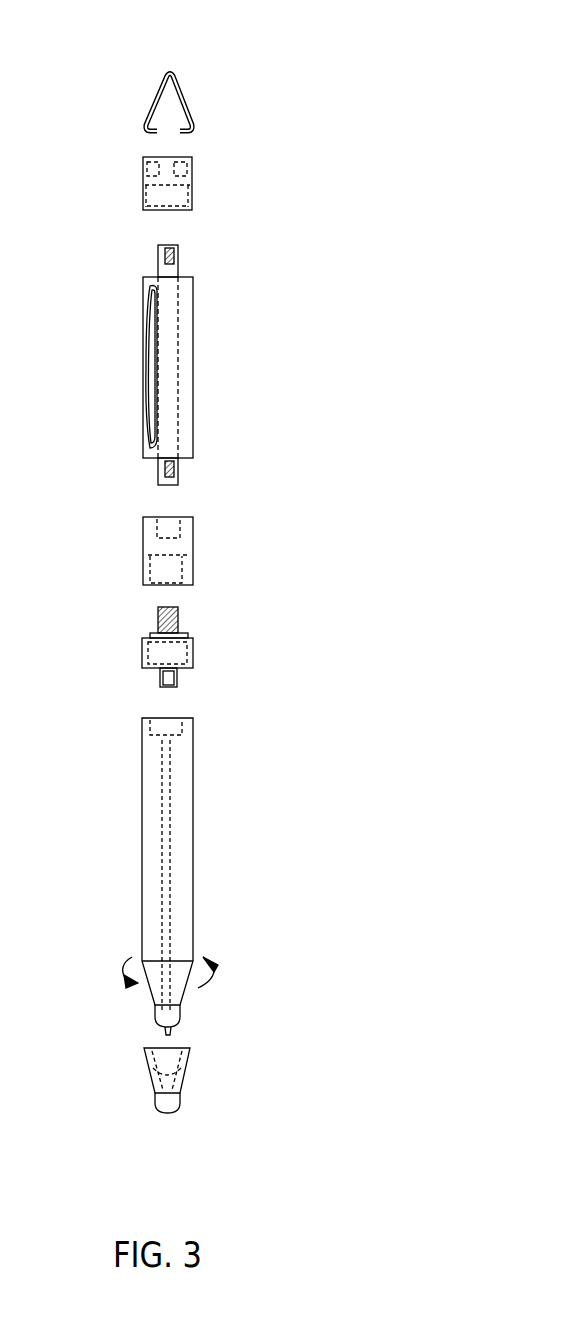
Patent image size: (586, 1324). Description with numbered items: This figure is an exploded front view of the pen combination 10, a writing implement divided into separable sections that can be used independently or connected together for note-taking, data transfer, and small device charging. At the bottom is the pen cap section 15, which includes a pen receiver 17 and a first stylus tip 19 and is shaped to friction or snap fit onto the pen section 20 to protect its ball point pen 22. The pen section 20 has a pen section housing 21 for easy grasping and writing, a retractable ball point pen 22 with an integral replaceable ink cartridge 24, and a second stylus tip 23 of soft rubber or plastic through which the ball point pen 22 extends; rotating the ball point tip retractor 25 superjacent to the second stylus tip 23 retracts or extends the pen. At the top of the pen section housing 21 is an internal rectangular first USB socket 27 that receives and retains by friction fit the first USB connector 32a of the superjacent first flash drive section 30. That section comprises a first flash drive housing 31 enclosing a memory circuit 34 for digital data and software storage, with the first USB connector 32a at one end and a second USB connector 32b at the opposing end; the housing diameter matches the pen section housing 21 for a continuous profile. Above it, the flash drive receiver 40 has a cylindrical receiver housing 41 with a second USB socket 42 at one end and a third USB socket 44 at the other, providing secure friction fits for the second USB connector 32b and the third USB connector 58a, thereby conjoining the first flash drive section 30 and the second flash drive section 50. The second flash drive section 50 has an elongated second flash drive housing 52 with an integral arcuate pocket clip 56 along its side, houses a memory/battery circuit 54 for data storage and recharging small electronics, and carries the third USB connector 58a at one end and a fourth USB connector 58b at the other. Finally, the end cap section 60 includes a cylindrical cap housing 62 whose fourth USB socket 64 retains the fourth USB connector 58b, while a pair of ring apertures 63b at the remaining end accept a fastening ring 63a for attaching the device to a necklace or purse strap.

The pen combination 10 is at (453, 162).
The pen cap section 15 is at (193, 1070).
The pen receiver 17 is at (162, 1067).
The first stylus tip 19 is at (178, 1108).
The pen section 20 is at (194, 837).
The pen section housing 21 is at (143, 910).
The ball point pen 22 is at (165, 1035).
The second stylus tip 23 is at (158, 1015).
The ink cartridge 24 is at (163, 840).
The ball point tip retractor 25 is at (145, 977).
The first USB socket 27 is at (168, 726).
The first flash drive section 30 is at (196, 653).
The first flash drive housing 31 is at (142, 653).
The first USB connector 32a is at (160, 677).
The second USB connector 32b is at (158, 618).
The memory circuit 34 is at (173, 647).
The flash drive receiver 40 is at (196, 555).
The receiver housing 41 is at (193, 520).
The second USB socket 42 is at (158, 570).
The third USB socket 44 is at (173, 535).
The second flash drive section 50 is at (195, 390).
The second flash drive housing 52 is at (193, 297).
The memory/battery circuit 54 is at (173, 417).
The pocket clip 56 is at (142, 373).
The third USB connector 58a is at (158, 470).
The fourth USB connector 58b is at (168, 272).
The end cap section 60 is at (194, 193).
The cap housing 62 is at (193, 205).
The fastening ring 63a is at (145, 123).
The ring aperture 63b is at (150, 167).
The fourth USB socket 64 is at (160, 198).